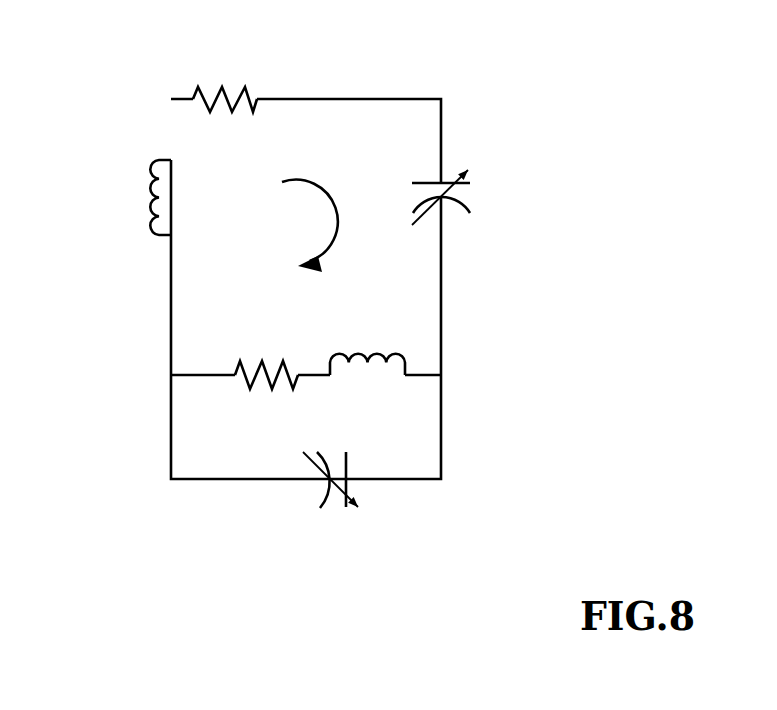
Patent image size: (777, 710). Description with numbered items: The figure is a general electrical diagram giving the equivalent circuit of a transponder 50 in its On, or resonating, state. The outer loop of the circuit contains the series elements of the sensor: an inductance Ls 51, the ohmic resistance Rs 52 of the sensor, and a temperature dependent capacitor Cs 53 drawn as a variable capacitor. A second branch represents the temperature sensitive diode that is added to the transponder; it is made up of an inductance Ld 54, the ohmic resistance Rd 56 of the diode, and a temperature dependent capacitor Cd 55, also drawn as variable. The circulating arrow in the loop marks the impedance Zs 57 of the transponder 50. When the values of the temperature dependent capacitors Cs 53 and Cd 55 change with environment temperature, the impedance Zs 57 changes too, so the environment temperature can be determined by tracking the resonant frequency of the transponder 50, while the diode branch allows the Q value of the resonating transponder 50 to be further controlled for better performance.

The transponder 50 is at (480, 110).
The inductance Ls 51 is at (145, 210).
The ohmic resistance Rs 52 is at (257, 88).
The temperature dependent capacitor Cs 53 is at (483, 212).
The inductance Ld 54 is at (383, 380).
The temperature dependent capacitor Cd 55 is at (308, 497).
The ohmic resistance Rd 56 is at (237, 397).
The impedance Zs 57 is at (277, 284).